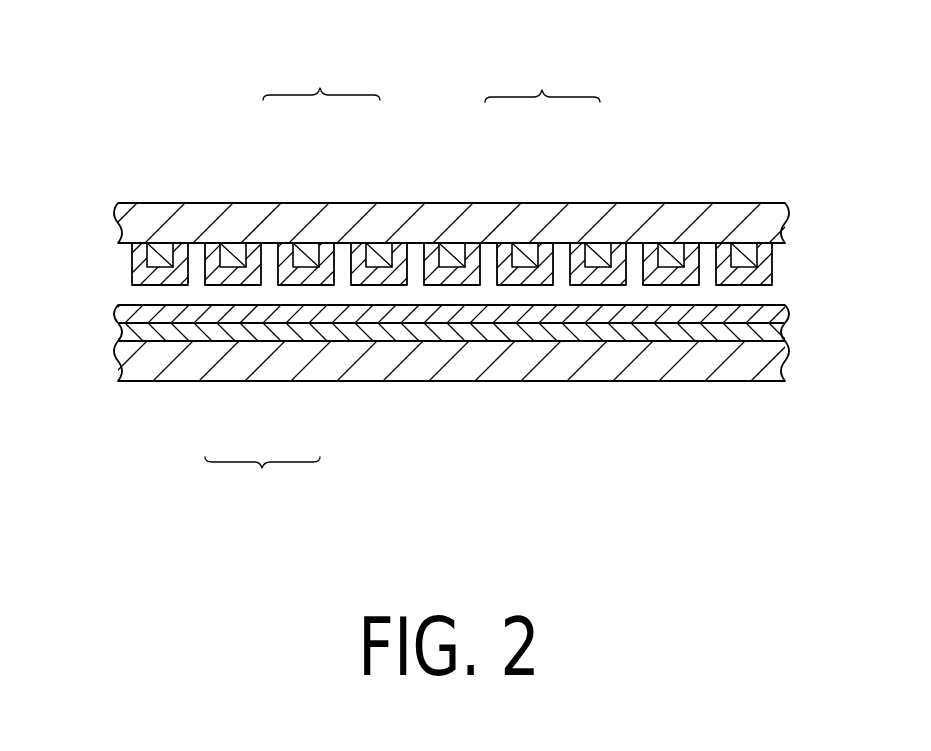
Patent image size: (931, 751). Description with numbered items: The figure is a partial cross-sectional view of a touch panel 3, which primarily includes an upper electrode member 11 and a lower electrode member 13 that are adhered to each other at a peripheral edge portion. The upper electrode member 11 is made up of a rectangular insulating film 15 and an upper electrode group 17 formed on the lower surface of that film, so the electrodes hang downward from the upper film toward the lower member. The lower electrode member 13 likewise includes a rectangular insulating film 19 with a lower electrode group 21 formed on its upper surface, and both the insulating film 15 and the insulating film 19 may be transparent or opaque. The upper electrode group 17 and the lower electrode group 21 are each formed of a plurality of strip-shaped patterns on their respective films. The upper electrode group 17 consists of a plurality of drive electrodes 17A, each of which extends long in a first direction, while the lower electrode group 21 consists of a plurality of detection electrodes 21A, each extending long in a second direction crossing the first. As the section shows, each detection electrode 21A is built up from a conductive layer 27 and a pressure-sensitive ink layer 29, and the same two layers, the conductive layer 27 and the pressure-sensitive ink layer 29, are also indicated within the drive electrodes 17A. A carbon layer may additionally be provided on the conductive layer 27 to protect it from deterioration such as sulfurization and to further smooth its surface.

The touch panel 3 is at (444, 101).
The upper electrode member 11 is at (795, 197).
The lower electrode member 13 is at (788, 388).
The insulating film 15 is at (773, 232).
The upper electrode group 17 is at (779, 270).
The drive electrode 17A is at (431, 79).
The insulating film 19 is at (183, 375).
The lower electrode group 21 is at (103, 323).
The detection electrode 21A is at (262, 482).
The conductive layer 27 is at (305, 253).
The pressure-sensitive ink layer 29 is at (336, 265).